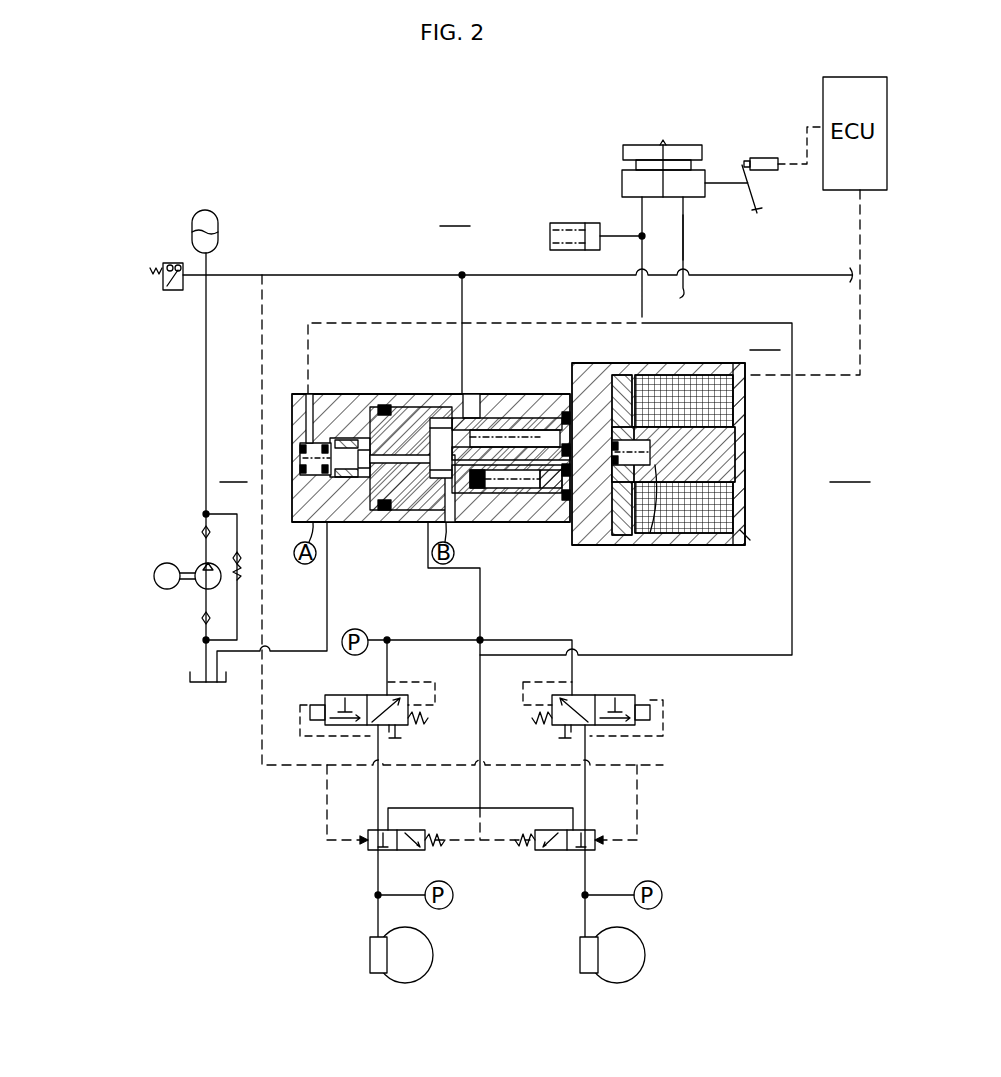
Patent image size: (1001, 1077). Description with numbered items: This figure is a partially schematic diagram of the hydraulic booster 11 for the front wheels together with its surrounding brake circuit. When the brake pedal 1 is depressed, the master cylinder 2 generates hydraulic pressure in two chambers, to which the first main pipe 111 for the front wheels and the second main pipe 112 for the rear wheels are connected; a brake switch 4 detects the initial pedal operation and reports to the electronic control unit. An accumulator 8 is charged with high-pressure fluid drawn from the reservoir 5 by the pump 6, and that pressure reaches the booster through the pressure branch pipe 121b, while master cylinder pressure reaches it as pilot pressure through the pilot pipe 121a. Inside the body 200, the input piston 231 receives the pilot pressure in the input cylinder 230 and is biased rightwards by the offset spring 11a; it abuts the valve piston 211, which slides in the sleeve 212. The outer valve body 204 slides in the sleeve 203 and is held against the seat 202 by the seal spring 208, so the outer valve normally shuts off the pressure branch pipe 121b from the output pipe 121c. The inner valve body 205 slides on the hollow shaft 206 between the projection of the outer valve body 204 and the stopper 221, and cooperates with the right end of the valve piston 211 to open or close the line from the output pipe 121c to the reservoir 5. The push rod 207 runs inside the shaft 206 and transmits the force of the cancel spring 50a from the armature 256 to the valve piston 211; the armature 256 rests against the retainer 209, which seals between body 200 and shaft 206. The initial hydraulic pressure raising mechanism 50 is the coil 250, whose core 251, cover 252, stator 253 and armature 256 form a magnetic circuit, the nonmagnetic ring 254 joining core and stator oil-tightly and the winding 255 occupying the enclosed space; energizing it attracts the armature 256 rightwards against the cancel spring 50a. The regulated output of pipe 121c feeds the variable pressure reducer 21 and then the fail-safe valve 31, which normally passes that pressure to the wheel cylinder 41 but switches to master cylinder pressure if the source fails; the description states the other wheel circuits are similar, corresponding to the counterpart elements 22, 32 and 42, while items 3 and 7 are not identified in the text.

The brake pedal 1 is at (760, 212).
The master cylinder 2 is at (707, 172).
The reservoir 3 is at (685, 144).
The brake switch 4 is at (766, 158).
The reservoir 5 is at (198, 688).
The pump 6 is at (206, 590).
The motor / pressure switch 7 is at (166, 590).
The accumulator 8 is at (220, 225).
The hydraulic booster 11 is at (427, 345).
The offset spring 11a is at (300, 460).
The variable pressure reducer 21 is at (345, 695).
The solenoid changeover valve 22 is at (625, 695).
The fail-safe valve 31 is at (368, 848).
The pressure control valve 32 is at (600, 848).
The wheel cylinder 41 is at (370, 968).
The front left wheel cylinder 42 is at (580, 968).
The initial hydraulic pressure raising mechanism 50 is at (748, 338).
The cancel spring 50a is at (655, 452).
The first main pipe 111 is at (630, 220).
The second main pipe 112 is at (685, 236).
The pilot pipe 121a is at (548, 323).
The pressure branch pipe 121b is at (465, 293).
The output pipe 121c is at (480, 622).
The body 200 is at (555, 400).
The seat 202 is at (445, 420).
The sleeve 203 is at (478, 418).
The outer valve body 204 is at (503, 430).
The inner valve body 205 is at (484, 493).
The shaft 206 is at (500, 493).
The push rod 207 is at (522, 493).
The seal spring 208 is at (566, 500).
The retainer 209 is at (580, 522).
The valve piston 211 is at (395, 500).
The sleeve 212 is at (380, 407).
The stopper 221 is at (440, 522).
The input cylinder 230 is at (336, 394).
The input piston 231 is at (362, 490).
The coil 250 is at (745, 472).
The core 251 is at (745, 395).
The cover 252 is at (676, 375).
The stator 253 is at (622, 535).
The ring 254 is at (672, 535).
The winding 255 is at (725, 500).
The armature 256 is at (620, 440).